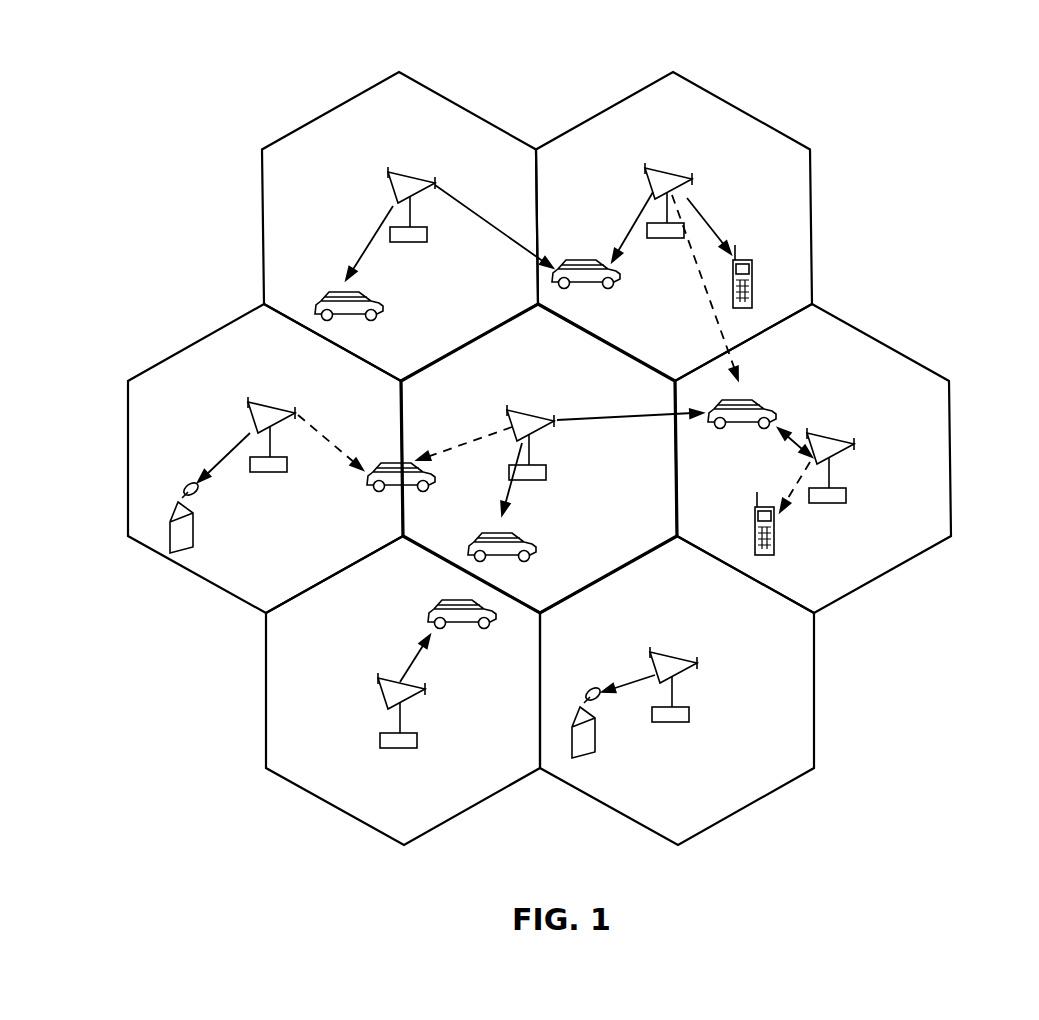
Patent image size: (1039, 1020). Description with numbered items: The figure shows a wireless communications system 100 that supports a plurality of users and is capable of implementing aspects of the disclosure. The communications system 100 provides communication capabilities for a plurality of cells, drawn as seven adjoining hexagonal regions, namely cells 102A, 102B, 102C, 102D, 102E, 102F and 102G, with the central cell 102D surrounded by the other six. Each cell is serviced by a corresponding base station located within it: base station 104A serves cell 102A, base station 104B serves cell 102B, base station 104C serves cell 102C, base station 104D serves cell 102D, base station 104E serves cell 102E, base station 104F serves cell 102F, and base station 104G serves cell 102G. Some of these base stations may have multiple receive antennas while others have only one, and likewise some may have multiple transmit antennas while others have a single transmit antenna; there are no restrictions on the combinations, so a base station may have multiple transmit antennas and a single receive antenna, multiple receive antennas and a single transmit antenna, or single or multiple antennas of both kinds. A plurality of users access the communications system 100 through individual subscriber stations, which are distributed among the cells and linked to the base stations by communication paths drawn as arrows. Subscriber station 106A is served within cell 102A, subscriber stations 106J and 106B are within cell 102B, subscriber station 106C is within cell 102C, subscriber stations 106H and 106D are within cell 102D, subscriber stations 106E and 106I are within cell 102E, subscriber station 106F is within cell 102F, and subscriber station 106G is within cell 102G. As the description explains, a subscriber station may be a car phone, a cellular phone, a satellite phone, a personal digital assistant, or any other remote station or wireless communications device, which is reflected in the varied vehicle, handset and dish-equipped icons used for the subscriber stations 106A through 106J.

The wireless communications system 100 is at (872, 48).
The cell 102A is at (340, 104).
The cell 102B is at (730, 103).
The cell 102C is at (196, 343).
The cell 102D is at (566, 333).
The cell 102E is at (952, 448).
The cell 102F is at (266, 700).
The cell 102G is at (815, 661).
The base station 104A is at (394, 172).
The base station 104B is at (650, 170).
The base station 104C is at (258, 403).
The base station 104D is at (517, 412).
The base station 104E is at (812, 438).
The base station 104F is at (380, 680).
The base station 104G is at (657, 660).
The subscriber station 106A is at (343, 297).
The subscriber station 106B is at (738, 258).
The subscriber station 106C is at (187, 484).
The subscriber station 106D is at (500, 533).
The subscriber station 106E is at (748, 398).
The subscriber station 106F is at (450, 602).
The subscriber station 106G is at (587, 688).
The subscriber station 106H is at (387, 465).
The subscriber station 106I is at (757, 506).
The subscriber station 106J is at (588, 261).